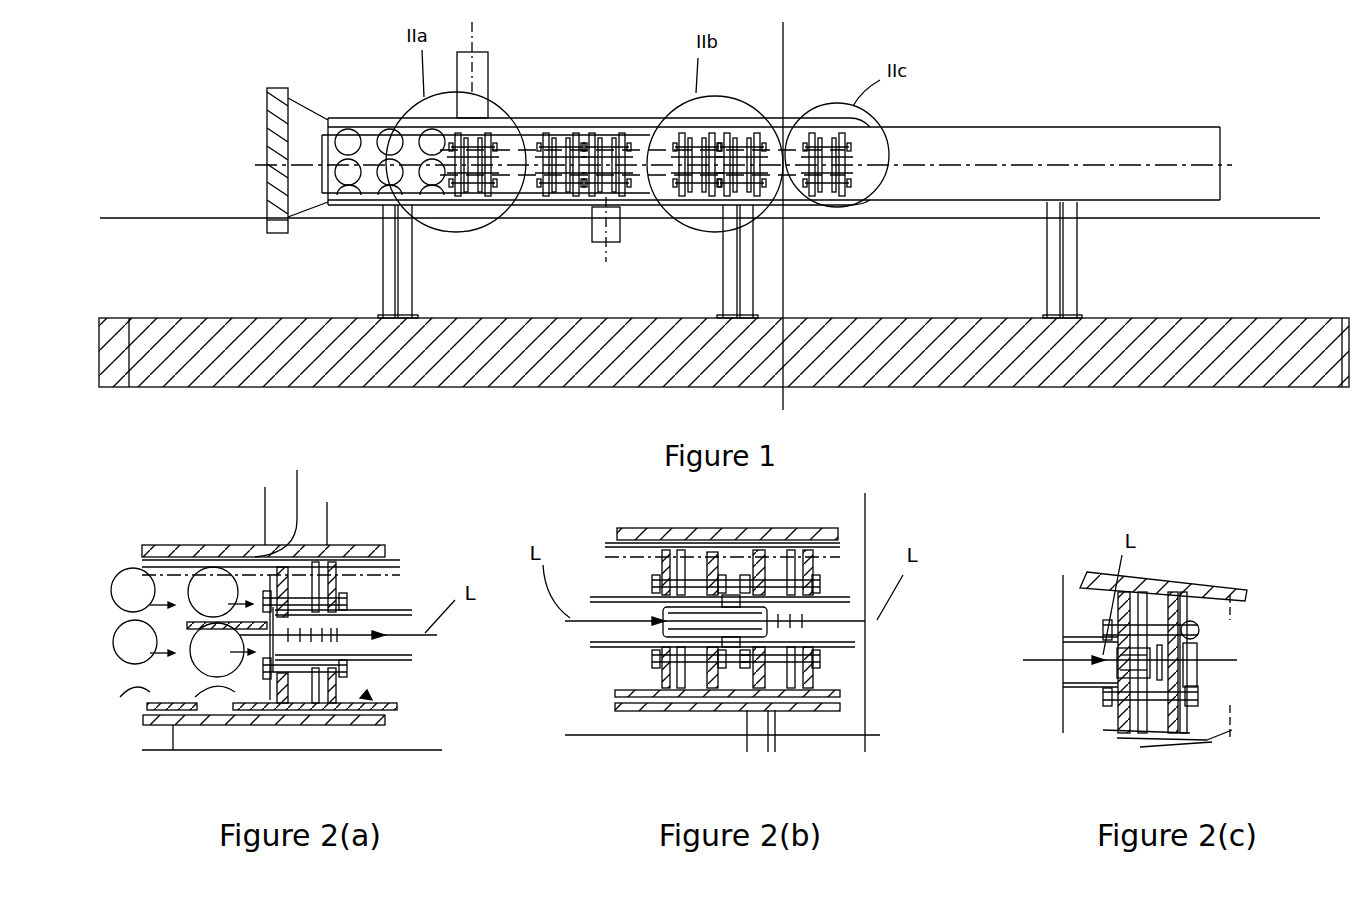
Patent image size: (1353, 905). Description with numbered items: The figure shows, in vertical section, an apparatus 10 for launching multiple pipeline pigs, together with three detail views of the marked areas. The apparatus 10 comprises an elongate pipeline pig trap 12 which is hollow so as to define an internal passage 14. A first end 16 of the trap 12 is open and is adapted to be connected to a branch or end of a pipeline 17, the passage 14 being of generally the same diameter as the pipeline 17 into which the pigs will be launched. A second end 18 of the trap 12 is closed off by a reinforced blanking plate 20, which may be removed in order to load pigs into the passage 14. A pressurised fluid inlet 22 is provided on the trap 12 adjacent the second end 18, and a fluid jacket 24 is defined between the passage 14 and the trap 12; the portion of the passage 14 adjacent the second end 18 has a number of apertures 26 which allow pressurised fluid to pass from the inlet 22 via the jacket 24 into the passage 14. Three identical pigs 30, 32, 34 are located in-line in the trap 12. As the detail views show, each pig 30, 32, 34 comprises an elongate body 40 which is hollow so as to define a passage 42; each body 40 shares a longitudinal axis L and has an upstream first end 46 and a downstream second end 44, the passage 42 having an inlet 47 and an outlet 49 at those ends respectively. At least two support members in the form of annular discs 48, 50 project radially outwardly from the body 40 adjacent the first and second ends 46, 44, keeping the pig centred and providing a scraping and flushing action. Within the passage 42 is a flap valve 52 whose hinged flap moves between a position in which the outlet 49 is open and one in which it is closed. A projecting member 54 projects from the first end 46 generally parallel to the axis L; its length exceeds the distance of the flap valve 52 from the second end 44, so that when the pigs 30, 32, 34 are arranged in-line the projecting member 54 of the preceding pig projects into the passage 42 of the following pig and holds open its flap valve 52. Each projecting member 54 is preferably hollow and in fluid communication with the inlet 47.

In FIG. 1, the apparatus 10 is at (576, 96).
In FIG. 1, the pipeline pig trap 12 is at (623, 127).
In FIG. 1, the internal passage 14 is at (538, 197).
In FIG. 1, the first end 16 is at (850, 208).
In FIG. 1, the pipeline 17 is at (1015, 122).
In FIG. 1, the second end 18 is at (337, 206).
In FIG. 1, the reinforced blanking plate 20 is at (275, 236).
In FIG. 1, the pressurised fluid inlet 22 is at (490, 78).
In FIG. 1, the fluid jacket 24 is at (533, 120).
In FIG. 1, the apertures 26 is at (382, 130).
In FIG. 2A, the apertures 26 is at (118, 650).
In FIG. 1, the pig 30 is at (783, 222).
In FIG. 2C, the pig 30 is at (1082, 730).
In FIG. 1, the pig 32 is at (638, 215).
In FIG. 2B, the pig 32 is at (607, 668).
In FIG. 1, the pig 34 is at (503, 176).
In FIG. 2A, the pig 34 is at (367, 693).
In FIG. 2A, the elongate body 40 is at (403, 606).
In FIG. 2B, the elongate body 40 is at (598, 594).
In FIG. 2C, the elongate body 40 is at (1090, 633).
In FIG. 2A, the passage 42 is at (412, 657).
In FIG. 2B, the passage 42 is at (600, 642).
In FIG. 2C, the passage 42 is at (1070, 682).
In FIG. 2B, the second end 44 is at (707, 653).
In FIG. 2C, the second end 44 is at (1203, 633).
In FIG. 2A, the first end 46 is at (263, 695).
In FIG. 2B, the first end 46 is at (777, 673).
In FIG. 2A, the inlet 47 is at (330, 580).
In FIG. 2B, the annular disc 48 is at (683, 673).
In FIG. 2C, the annular disc 48 is at (1147, 597).
In FIG. 2B, the outlet 49 is at (737, 600).
In FIG. 2A, the annular disc 50 is at (302, 713).
In FIG. 2B, the annular disc 50 is at (793, 560).
In FIG. 2B, the flap valve 52 is at (652, 655).
In FIG. 2C, the flap valve 52 is at (1197, 660).
In FIG. 2A, the projecting member 54 is at (193, 620).
In FIG. 2B, the projecting member 54 is at (750, 612).